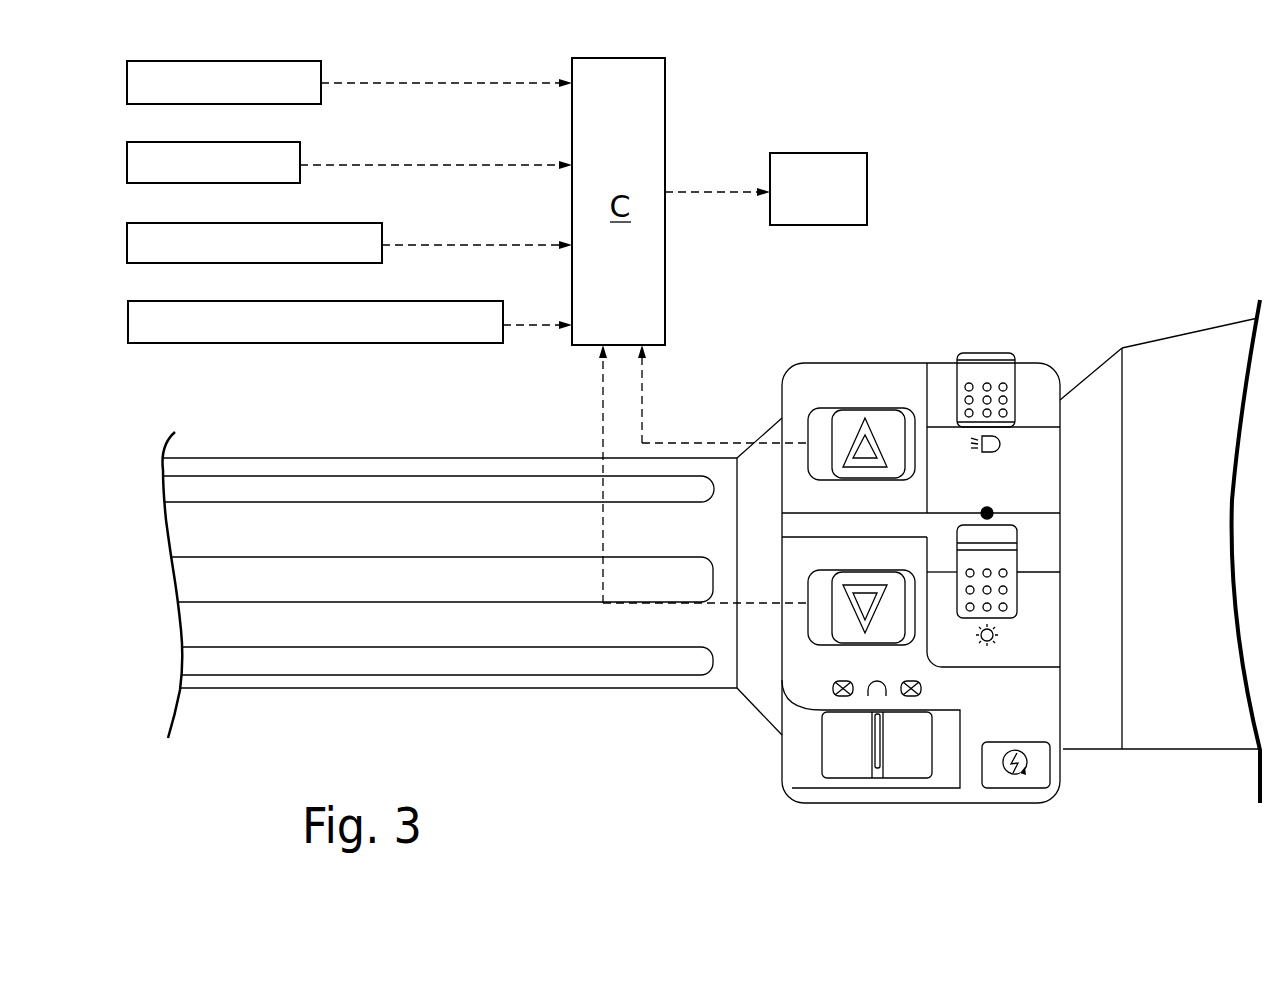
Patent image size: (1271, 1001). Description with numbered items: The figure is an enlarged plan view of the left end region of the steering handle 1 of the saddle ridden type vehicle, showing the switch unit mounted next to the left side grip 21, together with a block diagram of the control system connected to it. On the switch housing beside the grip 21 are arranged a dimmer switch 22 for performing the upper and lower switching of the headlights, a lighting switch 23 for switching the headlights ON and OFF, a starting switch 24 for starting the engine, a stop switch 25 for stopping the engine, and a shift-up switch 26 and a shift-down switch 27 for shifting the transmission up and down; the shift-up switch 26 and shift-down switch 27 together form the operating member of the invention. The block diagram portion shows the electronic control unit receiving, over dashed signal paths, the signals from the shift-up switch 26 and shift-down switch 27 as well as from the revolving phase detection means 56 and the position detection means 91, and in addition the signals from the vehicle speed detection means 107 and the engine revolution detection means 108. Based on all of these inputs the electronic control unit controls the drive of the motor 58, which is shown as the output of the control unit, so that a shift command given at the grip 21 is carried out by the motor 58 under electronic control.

The handle 1 is at (1163, 328).
The left side grip 21 is at (482, 467).
The dimmer switch 22 is at (983, 370).
The lighting switch 23 is at (1008, 595).
The starting switch 24 is at (1015, 782).
The stop switch 25 is at (917, 766).
The shift-up switch 26 is at (837, 428).
The shift-down switch 27 is at (825, 607).
The revolving phase detection means 56 is at (337, 223).
The motor 58 is at (800, 204).
The position detection means 91 is at (375, 302).
The vehicle speed detection means 107 is at (302, 62).
The engine revolution detection means 108 is at (297, 142).